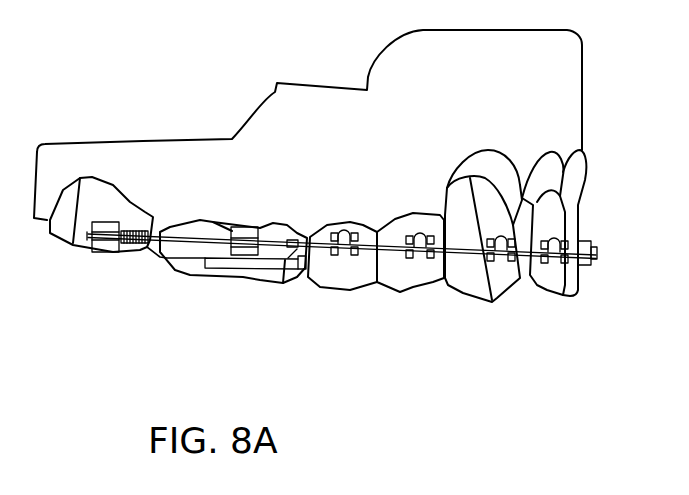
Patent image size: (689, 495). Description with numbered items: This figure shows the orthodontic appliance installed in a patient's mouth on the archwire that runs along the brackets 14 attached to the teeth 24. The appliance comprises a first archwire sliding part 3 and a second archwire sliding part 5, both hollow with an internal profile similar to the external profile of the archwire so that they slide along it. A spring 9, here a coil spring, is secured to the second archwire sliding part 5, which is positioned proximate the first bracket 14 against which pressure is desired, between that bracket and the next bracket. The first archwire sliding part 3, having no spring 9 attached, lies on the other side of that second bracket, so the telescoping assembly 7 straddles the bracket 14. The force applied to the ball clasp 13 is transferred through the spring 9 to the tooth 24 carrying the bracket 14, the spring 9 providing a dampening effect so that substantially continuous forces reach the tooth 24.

The first archwire sliding part 3 is at (297, 228).
The second archwire sliding part 5 is at (148, 229).
The telescoping assembly 7 is at (247, 266).
The spring 9 is at (137, 243).
The ball clasp 13 is at (306, 264).
The bracket 14 is at (443, 230).
The teeth 24 is at (541, 304).